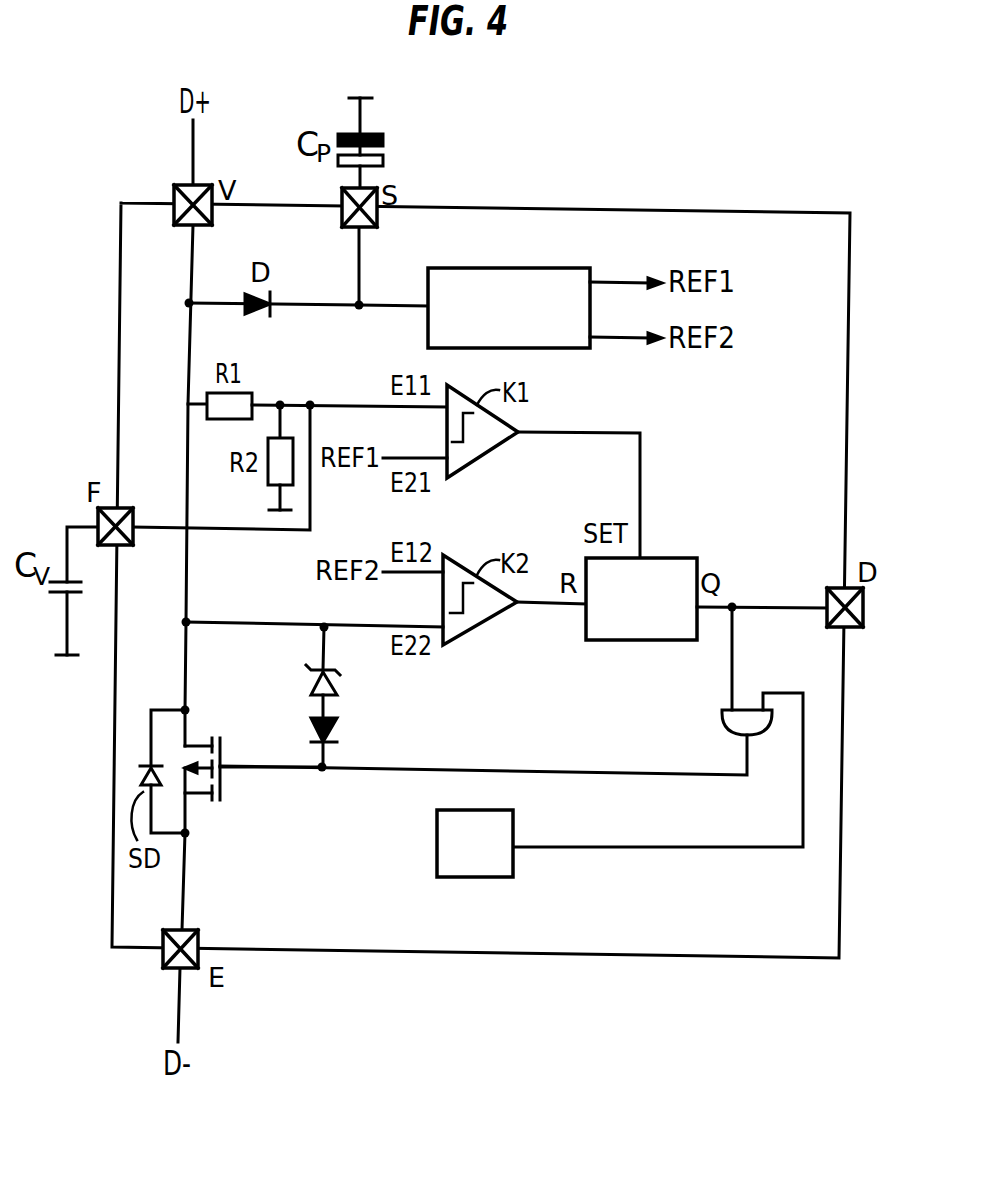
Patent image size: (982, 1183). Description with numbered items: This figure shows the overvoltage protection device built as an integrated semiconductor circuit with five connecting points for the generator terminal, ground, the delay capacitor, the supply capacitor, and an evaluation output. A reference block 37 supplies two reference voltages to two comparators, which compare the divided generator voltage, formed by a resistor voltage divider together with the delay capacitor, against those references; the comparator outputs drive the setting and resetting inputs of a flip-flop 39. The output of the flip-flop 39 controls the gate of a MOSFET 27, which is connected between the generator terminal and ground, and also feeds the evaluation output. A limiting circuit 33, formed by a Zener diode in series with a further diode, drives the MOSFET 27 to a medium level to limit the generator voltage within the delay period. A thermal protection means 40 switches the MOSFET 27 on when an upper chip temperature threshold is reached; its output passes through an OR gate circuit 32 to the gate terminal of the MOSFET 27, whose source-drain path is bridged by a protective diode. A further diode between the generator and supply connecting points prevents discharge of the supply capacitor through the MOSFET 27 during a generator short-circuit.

The reference voltage source REF 37 is at (500, 268).
The flip-flop 39 is at (685, 558).
The MOSFET 27 is at (222, 782).
The limiting circuit 33 is at (353, 655).
The OR gate circuit 32 is at (730, 737).
The thermal protection means 40 is at (497, 810).